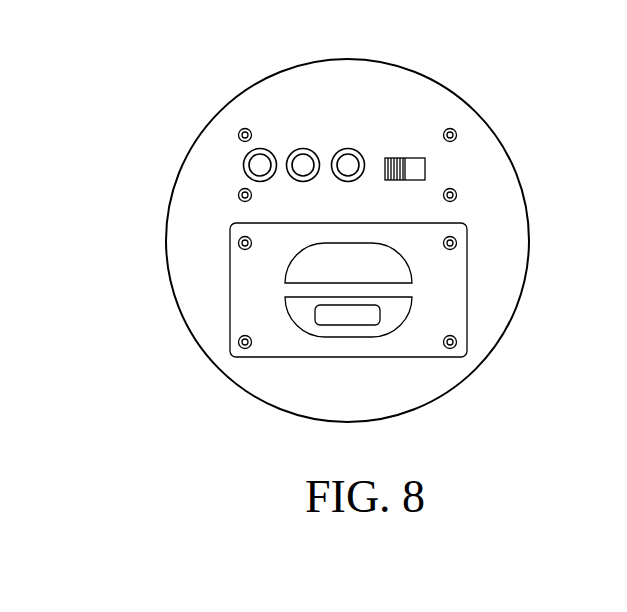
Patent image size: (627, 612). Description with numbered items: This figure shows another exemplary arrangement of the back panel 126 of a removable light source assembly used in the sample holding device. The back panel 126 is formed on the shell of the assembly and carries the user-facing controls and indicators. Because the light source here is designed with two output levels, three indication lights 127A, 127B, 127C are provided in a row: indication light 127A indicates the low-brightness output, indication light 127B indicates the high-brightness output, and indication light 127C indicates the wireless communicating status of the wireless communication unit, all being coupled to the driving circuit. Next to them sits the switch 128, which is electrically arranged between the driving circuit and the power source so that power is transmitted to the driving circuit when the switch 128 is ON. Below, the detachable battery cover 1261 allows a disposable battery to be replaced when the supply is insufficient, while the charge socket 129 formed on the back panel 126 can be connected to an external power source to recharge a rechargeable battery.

The back panel 126 is at (436, 98).
The indication light 127A is at (263, 165).
The indication light 127B is at (302, 152).
The indication light 127C is at (345, 152).
The switch 128 is at (400, 158).
The detachable battery cover 1261 is at (422, 315).
The charge socket 129 is at (337, 315).